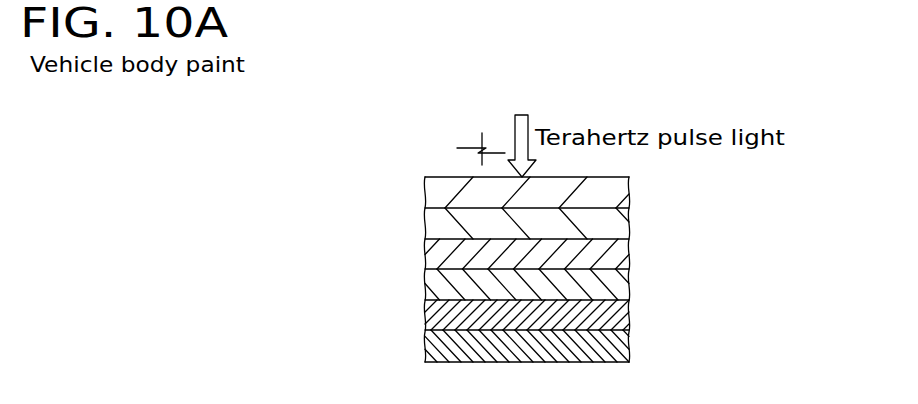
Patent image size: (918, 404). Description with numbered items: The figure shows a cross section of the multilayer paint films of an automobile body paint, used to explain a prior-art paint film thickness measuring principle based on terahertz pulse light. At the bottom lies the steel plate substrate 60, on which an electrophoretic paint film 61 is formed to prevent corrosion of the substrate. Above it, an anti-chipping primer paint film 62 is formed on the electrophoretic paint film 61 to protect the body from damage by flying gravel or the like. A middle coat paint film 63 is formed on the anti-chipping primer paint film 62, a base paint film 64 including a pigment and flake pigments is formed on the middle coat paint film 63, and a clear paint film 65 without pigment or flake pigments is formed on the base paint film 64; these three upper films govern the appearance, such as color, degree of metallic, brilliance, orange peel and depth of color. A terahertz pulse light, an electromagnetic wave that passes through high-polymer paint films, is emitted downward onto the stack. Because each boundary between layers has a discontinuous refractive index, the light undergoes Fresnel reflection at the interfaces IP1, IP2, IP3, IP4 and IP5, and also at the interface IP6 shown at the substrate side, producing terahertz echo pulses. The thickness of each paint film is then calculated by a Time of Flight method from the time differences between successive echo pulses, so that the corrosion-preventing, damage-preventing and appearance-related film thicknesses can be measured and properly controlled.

The clear paint film 65 is at (425, 193).
The base paint film 64 is at (425, 224).
The middle coat paint film 63 is at (425, 254).
The anti-chipping primer paint film 62 is at (425, 285).
The electrophoretic paint film 61 is at (425, 322).
The steel plate substrate 60 is at (425, 346).
The interface IP1 is at (629, 177).
The interface IP2 is at (629, 208).
The interface IP3 is at (629, 239).
The interface IP4 is at (629, 269).
The interface IP5 is at (629, 300).
The interface IP6 is at (629, 330).